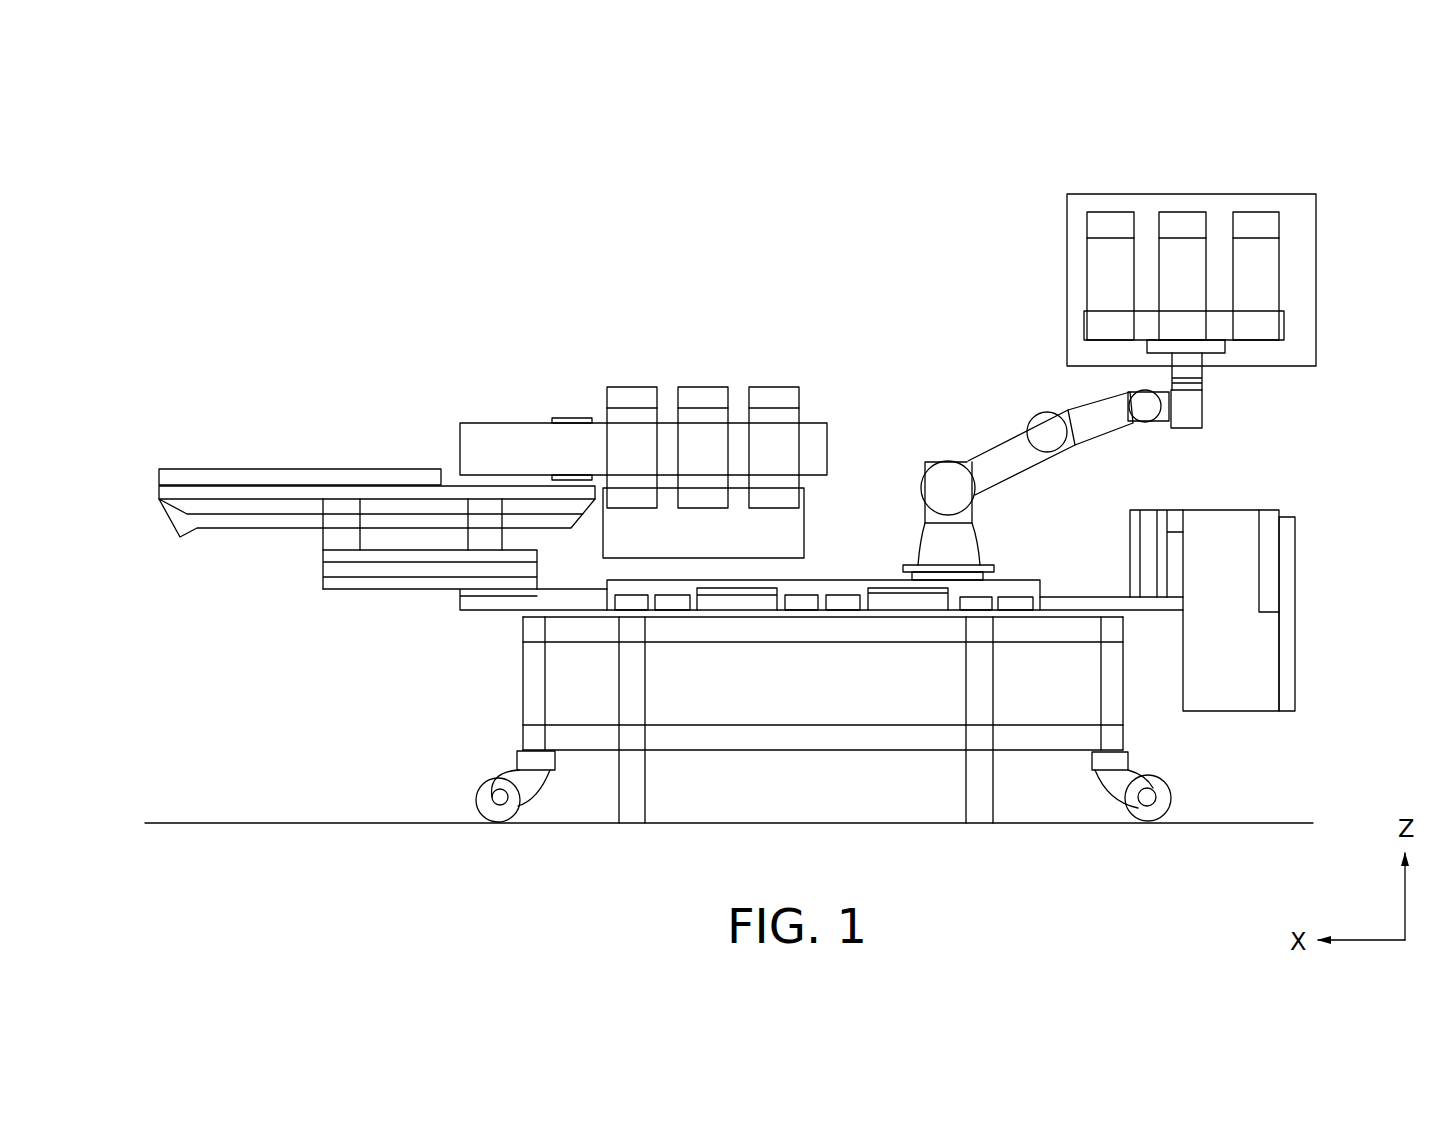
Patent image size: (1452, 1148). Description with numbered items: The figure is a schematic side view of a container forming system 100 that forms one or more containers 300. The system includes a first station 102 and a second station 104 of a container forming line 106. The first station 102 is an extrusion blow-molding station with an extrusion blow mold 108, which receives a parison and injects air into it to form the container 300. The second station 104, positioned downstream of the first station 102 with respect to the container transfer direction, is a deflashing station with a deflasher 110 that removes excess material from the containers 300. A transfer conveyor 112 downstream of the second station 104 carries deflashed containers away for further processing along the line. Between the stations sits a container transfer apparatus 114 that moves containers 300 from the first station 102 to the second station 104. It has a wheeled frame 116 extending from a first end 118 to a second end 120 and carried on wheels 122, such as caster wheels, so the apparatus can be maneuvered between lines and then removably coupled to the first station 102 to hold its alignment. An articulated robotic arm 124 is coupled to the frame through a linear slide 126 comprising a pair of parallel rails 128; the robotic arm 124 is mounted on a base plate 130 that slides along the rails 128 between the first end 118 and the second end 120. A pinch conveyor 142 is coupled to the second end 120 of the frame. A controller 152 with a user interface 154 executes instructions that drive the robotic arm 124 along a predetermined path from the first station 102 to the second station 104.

The container forming system 100 is at (1170, 130).
The first station 102 is at (1157, 837).
The second station 104 is at (628, 842).
The container forming line 106 is at (1265, 606).
The extrusion blow mold 108 is at (1230, 247).
The deflasher 110 is at (603, 558).
The transfer conveyor 112 is at (183, 467).
The container transfer apparatus 114 is at (796, 767).
The wheeled frame 116 is at (897, 740).
The first end 118 is at (1127, 711).
The second end 120 is at (523, 693).
The wheels 122 is at (1118, 818).
The robotic arm 124 is at (995, 408).
The linear slide 126 is at (1098, 583).
The rails 128 is at (1057, 598).
The base plate 130 is at (988, 563).
The pinch conveyor 142 is at (458, 423).
The controller 152 is at (1267, 711).
The user interface 154 is at (1267, 558).
The container 300 is at (1280, 283).